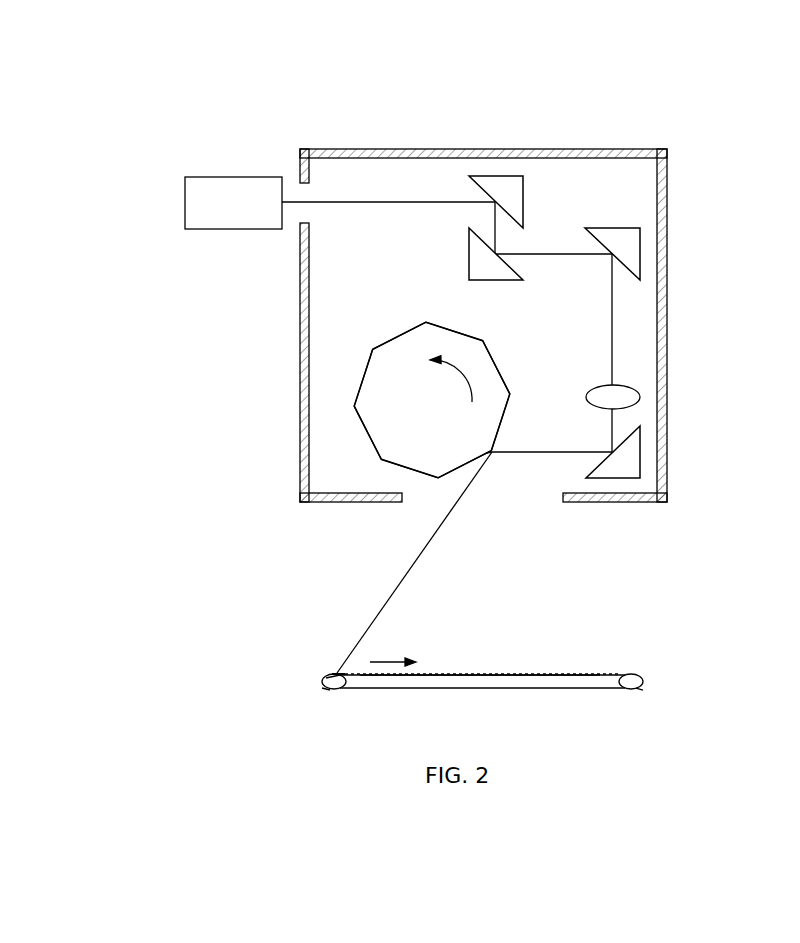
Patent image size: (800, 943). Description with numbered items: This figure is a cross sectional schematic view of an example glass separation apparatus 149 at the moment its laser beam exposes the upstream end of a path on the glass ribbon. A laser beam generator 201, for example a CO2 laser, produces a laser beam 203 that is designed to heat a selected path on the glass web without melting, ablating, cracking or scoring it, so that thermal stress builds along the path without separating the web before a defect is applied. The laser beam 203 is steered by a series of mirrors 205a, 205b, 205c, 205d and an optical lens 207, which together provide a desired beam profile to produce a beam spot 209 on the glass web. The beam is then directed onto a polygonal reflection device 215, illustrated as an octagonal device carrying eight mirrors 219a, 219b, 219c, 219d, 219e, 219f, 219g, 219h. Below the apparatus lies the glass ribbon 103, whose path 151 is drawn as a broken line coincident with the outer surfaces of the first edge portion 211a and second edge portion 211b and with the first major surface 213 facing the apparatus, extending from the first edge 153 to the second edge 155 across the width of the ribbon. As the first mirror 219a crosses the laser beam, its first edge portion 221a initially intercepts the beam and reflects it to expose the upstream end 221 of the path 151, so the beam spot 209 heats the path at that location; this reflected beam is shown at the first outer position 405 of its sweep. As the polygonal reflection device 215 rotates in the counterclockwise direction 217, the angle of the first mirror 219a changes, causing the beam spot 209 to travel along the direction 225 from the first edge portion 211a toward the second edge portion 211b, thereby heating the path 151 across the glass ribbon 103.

The glass separation apparatus 149 is at (483, 272).
The laser beam generator 201 is at (236, 177).
The laser beam 203 is at (360, 200).
The mirror 205a is at (523, 205).
The mirror 205b is at (469, 256).
The mirror 205c is at (640, 256).
The mirror 205d is at (640, 458).
The optical lens 207 is at (640, 397).
The polygonal reflection device 215 is at (468, 370).
The counterclockwise direction 217 is at (455, 358).
The first mirror 219a is at (464, 467).
The mirror 219b is at (410, 468).
The mirror 219c is at (368, 431).
The mirror 219d is at (364, 377).
The mirror 219e is at (396, 338).
The mirror 219f is at (448, 332).
The mirror 219g is at (500, 372).
The mirror 219h is at (507, 417).
The first edge portion of the first mirror 221a is at (494, 455).
The first outer position 405 is at (383, 592).
The glass ribbon 103 is at (580, 690).
The path 151 is at (450, 670).
The first edge 153 is at (322, 684).
The second edge 155 is at (643, 684).
The beam spot 209 is at (328, 675).
The first major surface 213 is at (480, 626).
The upstream end of the path 221 is at (336, 668).
The direction 225 is at (402, 660).
The first edge portion 211a is at (301, 740).
The second edge portion 211b is at (662, 740).